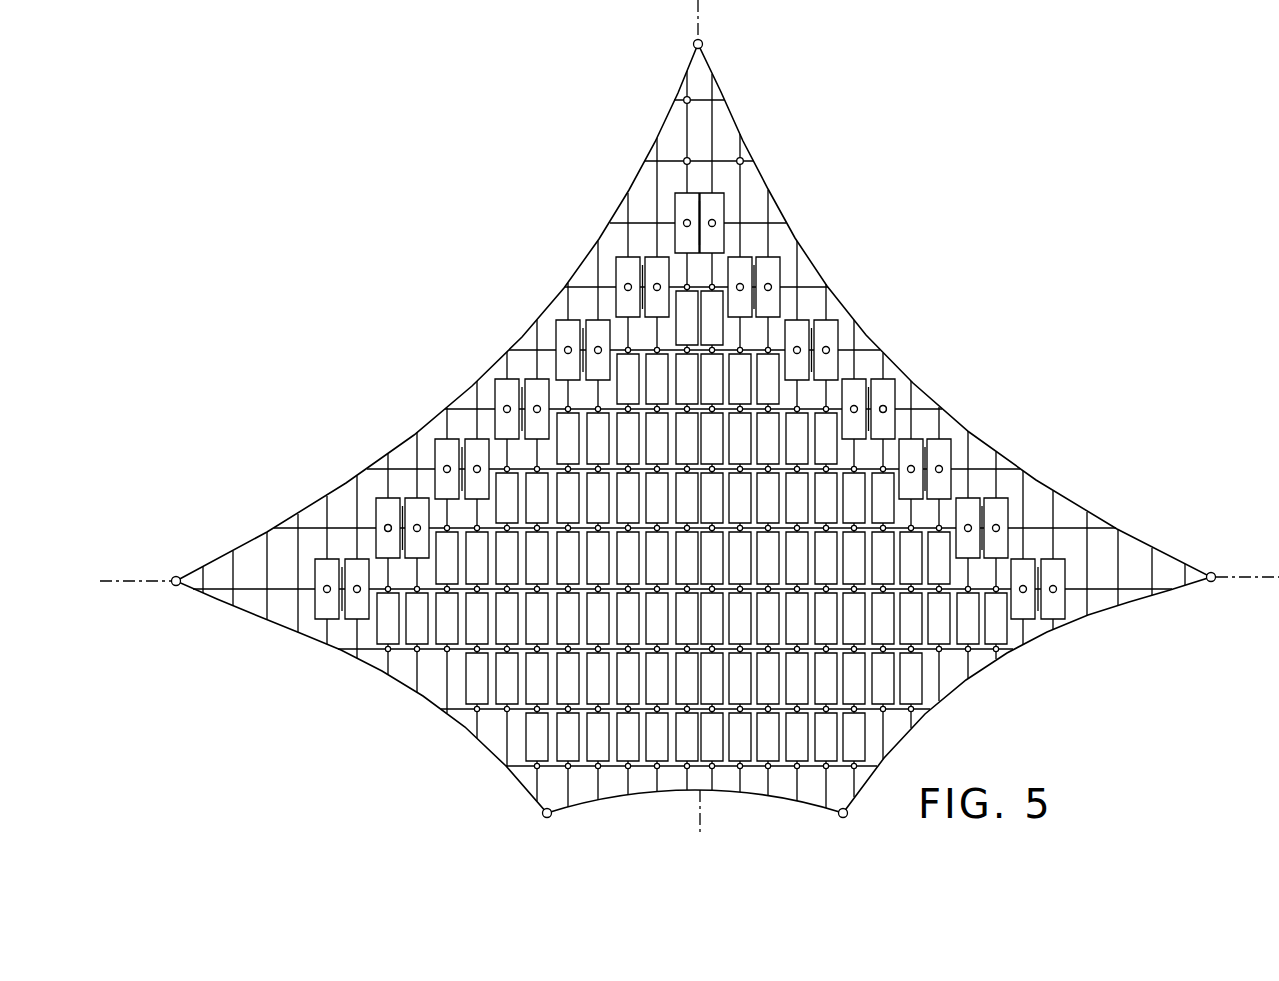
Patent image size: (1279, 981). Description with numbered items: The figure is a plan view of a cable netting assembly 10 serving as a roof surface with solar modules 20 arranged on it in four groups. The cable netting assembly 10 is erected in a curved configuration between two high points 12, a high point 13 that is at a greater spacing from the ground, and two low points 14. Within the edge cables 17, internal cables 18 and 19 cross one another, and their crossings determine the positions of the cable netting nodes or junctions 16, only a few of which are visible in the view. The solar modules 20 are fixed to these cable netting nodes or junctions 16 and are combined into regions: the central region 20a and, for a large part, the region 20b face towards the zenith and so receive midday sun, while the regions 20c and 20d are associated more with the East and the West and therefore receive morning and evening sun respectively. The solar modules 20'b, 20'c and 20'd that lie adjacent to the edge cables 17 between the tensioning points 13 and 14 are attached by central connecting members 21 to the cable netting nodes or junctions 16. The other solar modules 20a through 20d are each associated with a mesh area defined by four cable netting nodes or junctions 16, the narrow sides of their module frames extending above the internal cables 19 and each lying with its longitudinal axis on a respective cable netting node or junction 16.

The cable netting assembly 10 is at (957, 254).
The high points 12 is at (843, 813).
The high point 13 is at (703, 45).
The low points 14 is at (1213, 576).
The cable netting nodes or junctions 16 is at (746, 160).
The edge cables 17 is at (1140, 541).
The internal cables 18 is at (1025, 493).
The internal cables 19 is at (808, 285).
The solar modules 20 is at (692, 477).
The central region of solar modules 20a is at (708, 698).
The region of solar modules 20b is at (830, 447).
The region of solar modules 20c is at (922, 684).
The region of solar modules 20d is at (472, 682).
The solar modules adjacent to the edge cables 20'b is at (865, 349).
The solar modules adjacent to the edge cables 20'c is at (1062, 621).
The solar modules adjacent to the edge cables 20'd is at (332, 624).
The central connecting members 21 is at (885, 410).